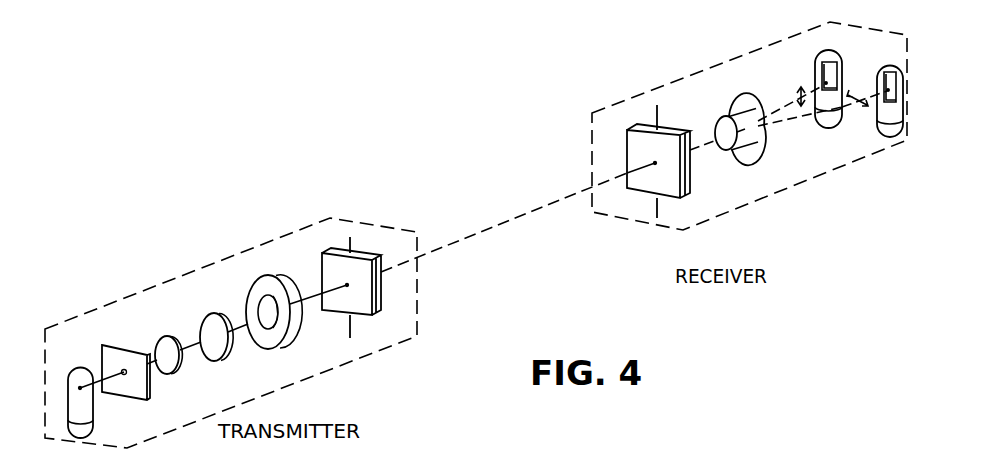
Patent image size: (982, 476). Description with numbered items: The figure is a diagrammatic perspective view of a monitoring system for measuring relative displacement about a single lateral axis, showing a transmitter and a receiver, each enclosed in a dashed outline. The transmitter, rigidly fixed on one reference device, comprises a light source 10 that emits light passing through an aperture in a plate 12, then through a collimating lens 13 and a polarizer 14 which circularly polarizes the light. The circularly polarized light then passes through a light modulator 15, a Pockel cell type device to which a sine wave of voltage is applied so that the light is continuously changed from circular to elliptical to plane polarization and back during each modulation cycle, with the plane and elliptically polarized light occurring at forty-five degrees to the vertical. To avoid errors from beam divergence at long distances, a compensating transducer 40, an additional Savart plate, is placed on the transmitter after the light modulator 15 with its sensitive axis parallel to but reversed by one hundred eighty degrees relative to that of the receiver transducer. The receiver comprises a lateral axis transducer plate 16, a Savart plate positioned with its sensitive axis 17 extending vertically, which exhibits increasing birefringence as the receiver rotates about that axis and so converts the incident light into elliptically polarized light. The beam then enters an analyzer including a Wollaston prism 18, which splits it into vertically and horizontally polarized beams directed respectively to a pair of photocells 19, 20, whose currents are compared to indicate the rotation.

The light source 10 is at (90, 410).
The plate 12 is at (140, 397).
The collimating lens 13 is at (185, 370).
The polarizer 14 is at (225, 355).
The light modulator 15 is at (295, 335).
The compensating transducer 40 is at (365, 315).
The lateral axis transducer plate 16 is at (687, 189).
The sensitive axis 17 is at (658, 113).
The Wollaston prism 18 is at (755, 140).
The photocell 19 is at (823, 55).
The photocell 20 is at (888, 65).